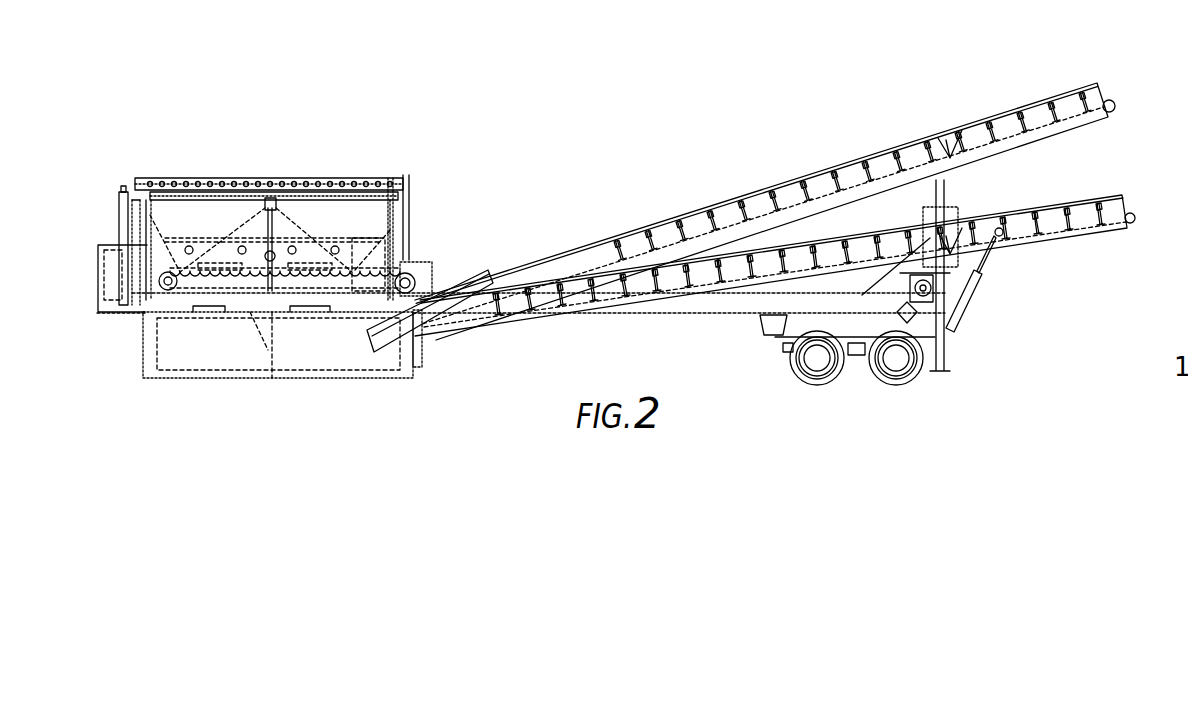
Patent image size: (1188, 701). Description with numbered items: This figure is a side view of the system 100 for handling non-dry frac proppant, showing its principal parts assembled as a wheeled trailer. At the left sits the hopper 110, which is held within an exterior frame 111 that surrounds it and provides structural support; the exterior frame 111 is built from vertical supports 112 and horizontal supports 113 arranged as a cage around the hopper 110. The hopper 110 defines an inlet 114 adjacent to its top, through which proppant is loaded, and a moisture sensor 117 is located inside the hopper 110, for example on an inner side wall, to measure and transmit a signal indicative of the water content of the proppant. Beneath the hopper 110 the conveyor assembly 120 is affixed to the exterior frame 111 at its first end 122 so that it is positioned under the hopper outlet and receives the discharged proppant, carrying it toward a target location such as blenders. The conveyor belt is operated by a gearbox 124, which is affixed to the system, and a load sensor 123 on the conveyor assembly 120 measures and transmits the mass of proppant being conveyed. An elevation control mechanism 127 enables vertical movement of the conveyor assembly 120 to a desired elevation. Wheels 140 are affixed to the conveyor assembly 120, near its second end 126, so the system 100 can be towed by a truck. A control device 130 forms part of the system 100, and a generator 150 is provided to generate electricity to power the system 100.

The system 100 is at (569, 194).
The hopper 110 is at (372, 222).
The exterior frame 111 is at (392, 247).
The vertical supports 112 is at (138, 198).
The horizontal supports 113 is at (150, 307).
The inlet 114 is at (178, 190).
The moisture sensor 117 is at (335, 246).
The conveyor assembly 120 is at (722, 235).
The first end 122 is at (392, 262).
The load sensor 123 is at (957, 212).
The gearbox 124 is at (395, 293).
The second end 126 is at (1098, 90).
The elevation control mechanism 127 is at (943, 291).
The control device 130 is at (400, 270).
The wheels 140 is at (820, 384).
The generator 150 is at (103, 298).